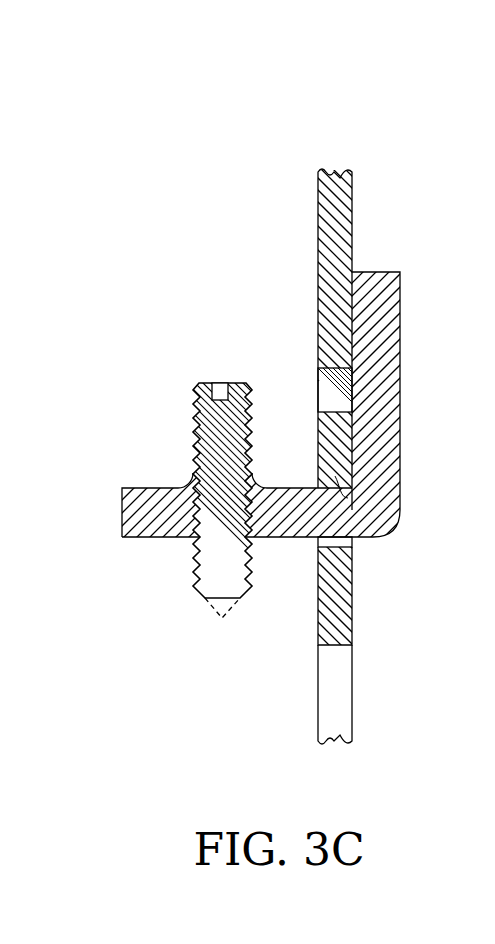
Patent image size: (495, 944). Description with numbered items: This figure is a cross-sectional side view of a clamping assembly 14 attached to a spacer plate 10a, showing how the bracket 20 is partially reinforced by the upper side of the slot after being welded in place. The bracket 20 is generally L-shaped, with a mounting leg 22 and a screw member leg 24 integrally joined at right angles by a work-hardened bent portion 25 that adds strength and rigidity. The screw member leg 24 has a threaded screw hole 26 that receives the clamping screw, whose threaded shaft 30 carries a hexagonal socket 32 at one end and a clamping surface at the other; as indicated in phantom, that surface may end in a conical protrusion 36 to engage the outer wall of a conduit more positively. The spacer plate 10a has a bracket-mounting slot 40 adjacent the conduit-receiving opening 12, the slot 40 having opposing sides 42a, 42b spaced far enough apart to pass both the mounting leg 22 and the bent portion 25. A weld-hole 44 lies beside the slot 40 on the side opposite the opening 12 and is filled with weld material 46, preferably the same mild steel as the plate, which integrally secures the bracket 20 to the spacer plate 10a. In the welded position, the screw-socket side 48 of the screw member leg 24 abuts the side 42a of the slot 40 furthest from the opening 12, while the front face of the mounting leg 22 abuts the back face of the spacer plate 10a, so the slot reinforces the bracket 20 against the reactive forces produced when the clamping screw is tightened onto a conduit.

The spacer plate 10a is at (341, 162).
The conduit-receiving opening 12 is at (348, 650).
The clamping assembly 14 is at (174, 285).
The bracket 20 is at (247, 472).
The mounting leg 22 is at (385, 369).
The screw member leg 24 is at (137, 513).
The bent portion 25 is at (388, 522).
The threaded screw hole 26 is at (200, 465).
The threaded shaft 30 is at (277, 504).
The hexagonal socket 32 is at (220, 382).
The conical protrusion 36 is at (215, 605).
The bracket-mounting slot 40 is at (352, 547).
The side of slot 42a is at (348, 498).
The side of slot 42b is at (326, 545).
The weld-hole 44 is at (318, 405).
The weld material 46 is at (318, 381).
The screw-socket side 48 is at (335, 476).